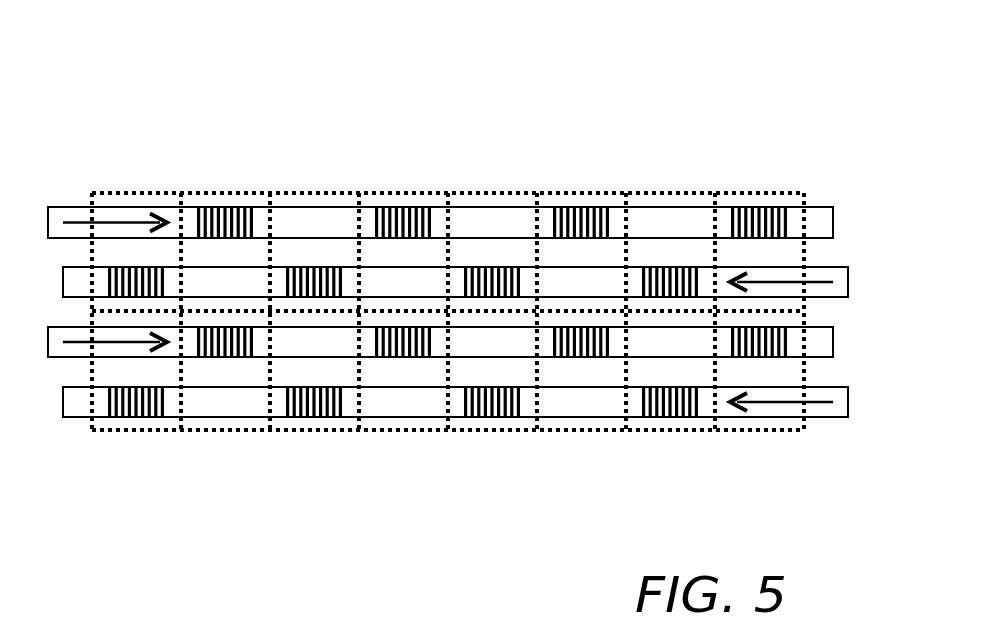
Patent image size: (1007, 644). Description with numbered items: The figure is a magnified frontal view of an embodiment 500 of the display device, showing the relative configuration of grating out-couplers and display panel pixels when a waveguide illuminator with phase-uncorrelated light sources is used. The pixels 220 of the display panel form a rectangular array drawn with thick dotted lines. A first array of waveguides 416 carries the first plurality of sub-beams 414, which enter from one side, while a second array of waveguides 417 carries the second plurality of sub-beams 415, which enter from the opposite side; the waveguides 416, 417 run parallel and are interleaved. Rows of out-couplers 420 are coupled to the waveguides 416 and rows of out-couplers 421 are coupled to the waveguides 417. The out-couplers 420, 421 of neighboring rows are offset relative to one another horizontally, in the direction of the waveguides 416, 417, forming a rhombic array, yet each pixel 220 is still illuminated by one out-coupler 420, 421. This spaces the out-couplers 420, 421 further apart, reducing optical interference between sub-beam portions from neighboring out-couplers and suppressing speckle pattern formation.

The embodiment of the display device 500 is at (448, 275).
The pixels 220 is at (225, 190).
The first plurality of sub-beams 414 is at (123, 207).
The second plurality of sub-beams 415 is at (765, 403).
The first array of waveguides 416 is at (320, 207).
The second array of waveguides 417 is at (220, 400).
The first array of out-couplers 420 is at (408, 207).
The out-couplers 421 is at (125, 417).